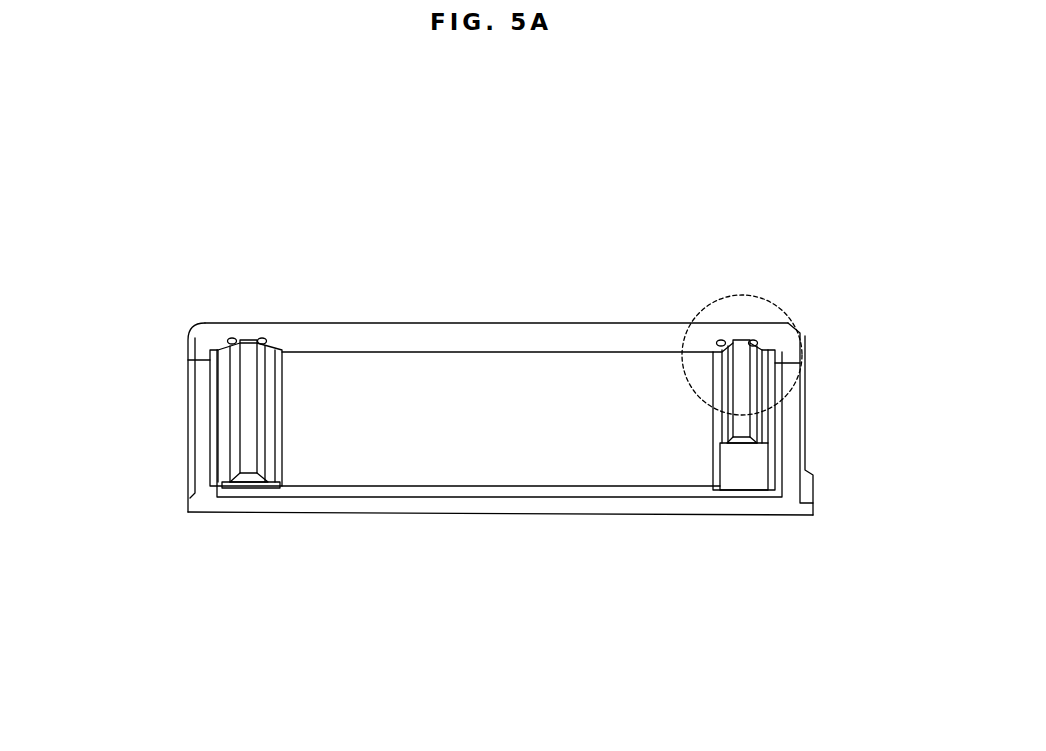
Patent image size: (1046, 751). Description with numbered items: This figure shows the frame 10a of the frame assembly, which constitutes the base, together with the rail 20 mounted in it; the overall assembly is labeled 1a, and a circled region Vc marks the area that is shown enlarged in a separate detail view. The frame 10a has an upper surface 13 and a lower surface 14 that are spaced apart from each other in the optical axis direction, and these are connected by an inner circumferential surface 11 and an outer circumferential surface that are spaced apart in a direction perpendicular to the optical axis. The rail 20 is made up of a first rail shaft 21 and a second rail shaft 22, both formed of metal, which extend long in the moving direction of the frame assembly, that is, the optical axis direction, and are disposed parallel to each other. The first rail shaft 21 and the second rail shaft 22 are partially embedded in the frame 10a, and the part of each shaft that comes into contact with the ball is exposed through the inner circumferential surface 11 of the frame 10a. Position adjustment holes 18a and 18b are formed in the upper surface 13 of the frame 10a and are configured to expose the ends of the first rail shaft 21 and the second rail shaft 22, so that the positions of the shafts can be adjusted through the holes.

The battery module 1a is at (84, 156).
The frame 10a is at (413, 340).
The inner circumferential surface 11 is at (260, 342).
The upper surface 13 is at (323, 330).
The lower surface 14 is at (348, 515).
The position adjustment hole 18a is at (720, 345).
The position adjustment hole 18b is at (755, 345).
The rail 20 is at (500, 415).
The first rail shaft 21 is at (753, 370).
The second rail shaft 22 is at (733, 378).
The enlarged view region Vc is at (751, 350).